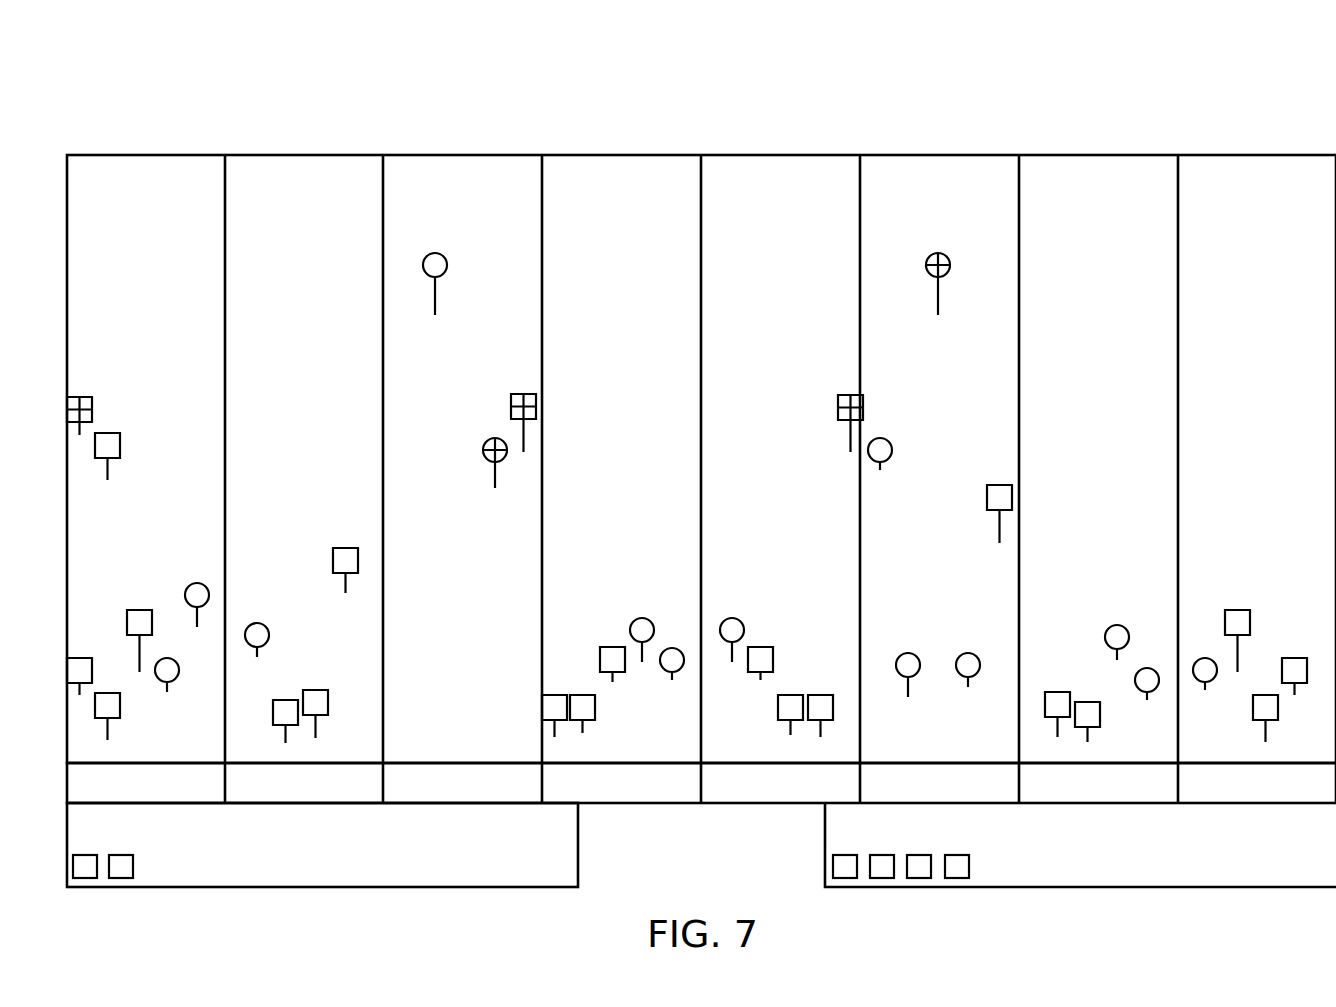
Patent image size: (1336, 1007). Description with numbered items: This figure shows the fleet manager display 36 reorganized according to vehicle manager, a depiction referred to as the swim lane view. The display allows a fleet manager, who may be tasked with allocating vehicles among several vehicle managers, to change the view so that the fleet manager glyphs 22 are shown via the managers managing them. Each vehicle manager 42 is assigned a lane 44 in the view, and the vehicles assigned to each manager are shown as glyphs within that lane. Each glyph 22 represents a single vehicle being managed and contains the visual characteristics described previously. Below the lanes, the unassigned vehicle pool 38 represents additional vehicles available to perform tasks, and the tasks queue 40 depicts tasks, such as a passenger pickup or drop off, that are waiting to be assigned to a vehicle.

The fleet manager glyph 22 is at (642, 618).
The fleet manager display 36 is at (701, 484).
The unassigned vehicle pool 38 is at (555, 858).
The tasks queue 40 is at (830, 840).
The vehicle manager 42 is at (1218, 795).
The lane 44 is at (1080, 182).